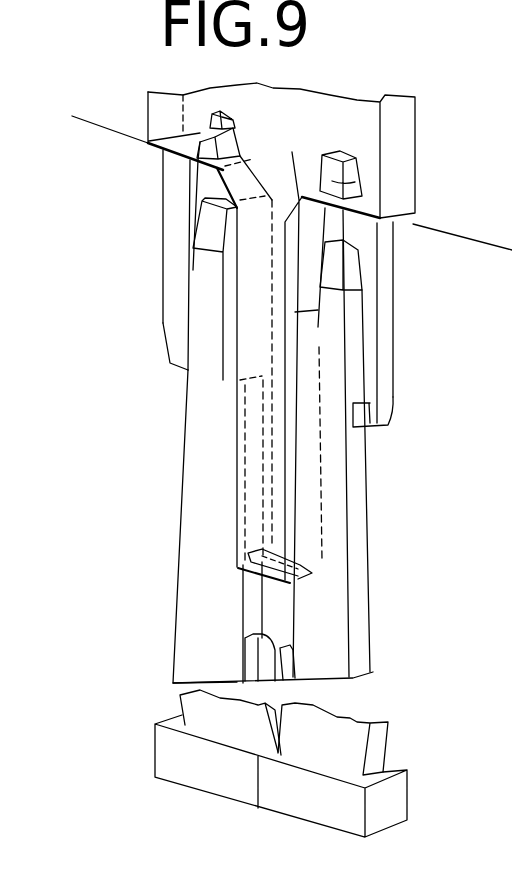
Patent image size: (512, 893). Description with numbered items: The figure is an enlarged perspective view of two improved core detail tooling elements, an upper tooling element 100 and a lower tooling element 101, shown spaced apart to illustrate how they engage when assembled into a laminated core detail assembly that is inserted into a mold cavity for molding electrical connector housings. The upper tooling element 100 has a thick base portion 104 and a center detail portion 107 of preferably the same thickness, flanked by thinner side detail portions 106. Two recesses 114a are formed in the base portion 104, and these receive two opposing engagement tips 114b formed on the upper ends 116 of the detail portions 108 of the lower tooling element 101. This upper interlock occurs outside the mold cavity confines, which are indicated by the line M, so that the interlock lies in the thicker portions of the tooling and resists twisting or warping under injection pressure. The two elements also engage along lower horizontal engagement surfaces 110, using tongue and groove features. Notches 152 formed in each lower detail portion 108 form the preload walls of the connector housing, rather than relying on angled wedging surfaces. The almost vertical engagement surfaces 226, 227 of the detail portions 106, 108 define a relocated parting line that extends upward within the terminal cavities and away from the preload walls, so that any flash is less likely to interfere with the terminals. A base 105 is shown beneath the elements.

The upper core detail tooling element 100 is at (178, 116).
The lower core detail tooling element 101 is at (213, 592).
The base portion 104 is at (367, 137).
The base 105 is at (280, 797).
The side detail portion 106 is at (173, 250).
The center detail portion 107 is at (263, 342).
The lower tooling element detail portion 108 is at (225, 573).
The lower horizontal engagement surface 110 is at (247, 646).
The recess 114a is at (247, 128).
The engagement tip 114b is at (210, 225).
The upper end 116 is at (297, 347).
The notch 152 is at (234, 345).
The engagement surface 226 is at (187, 422).
The engagement surface 227 is at (188, 322).
The line M is at (427, 238).